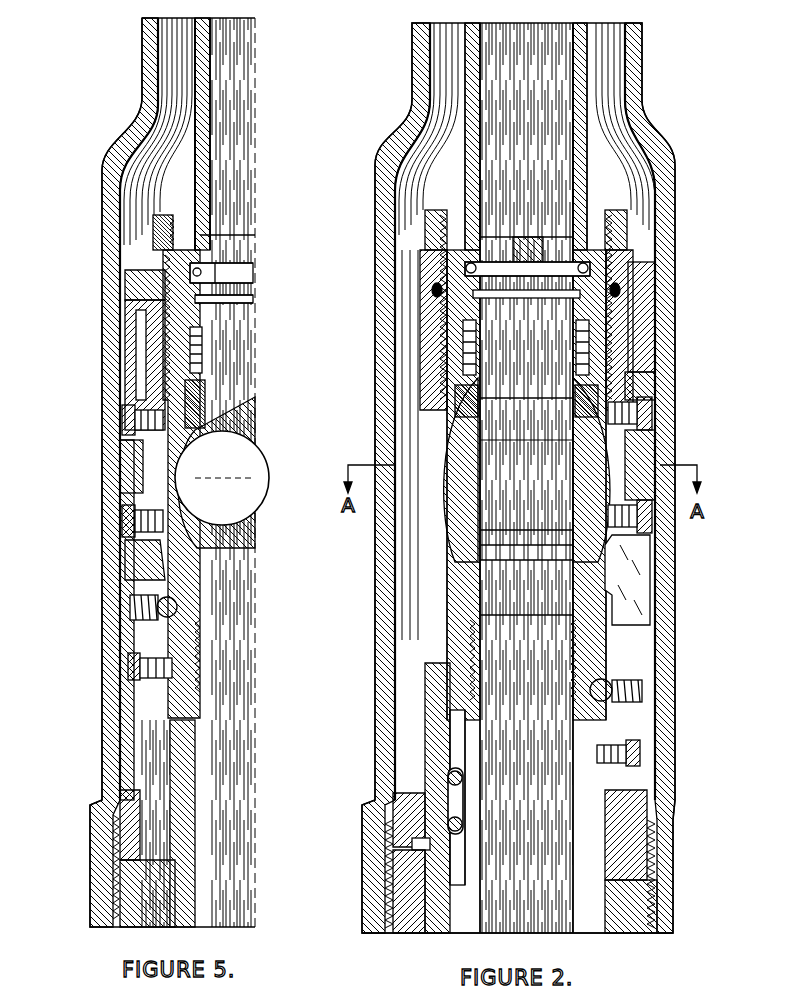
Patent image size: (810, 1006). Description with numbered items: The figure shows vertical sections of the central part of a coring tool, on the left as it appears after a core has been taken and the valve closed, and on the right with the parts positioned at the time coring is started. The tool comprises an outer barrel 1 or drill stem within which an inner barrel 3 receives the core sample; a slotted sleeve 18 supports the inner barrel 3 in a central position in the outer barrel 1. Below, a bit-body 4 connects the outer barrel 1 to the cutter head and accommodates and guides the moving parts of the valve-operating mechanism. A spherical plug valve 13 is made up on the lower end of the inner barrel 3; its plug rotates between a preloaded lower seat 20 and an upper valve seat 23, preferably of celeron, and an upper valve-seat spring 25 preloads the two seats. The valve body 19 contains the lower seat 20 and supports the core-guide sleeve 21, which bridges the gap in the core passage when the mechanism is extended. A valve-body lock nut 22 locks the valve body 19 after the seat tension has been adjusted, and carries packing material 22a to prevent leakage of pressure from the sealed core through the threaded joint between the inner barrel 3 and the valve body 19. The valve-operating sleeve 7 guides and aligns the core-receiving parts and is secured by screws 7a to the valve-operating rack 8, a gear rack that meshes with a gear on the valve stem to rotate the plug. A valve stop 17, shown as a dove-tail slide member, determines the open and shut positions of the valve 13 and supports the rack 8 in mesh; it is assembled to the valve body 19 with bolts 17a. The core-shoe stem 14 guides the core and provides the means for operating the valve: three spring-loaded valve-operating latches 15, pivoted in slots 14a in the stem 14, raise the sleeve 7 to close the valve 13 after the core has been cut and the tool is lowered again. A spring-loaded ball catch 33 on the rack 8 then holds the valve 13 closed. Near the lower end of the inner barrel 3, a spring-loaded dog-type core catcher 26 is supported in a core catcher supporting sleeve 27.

In FIG. 5, the outer barrel 1 is at (145, 113).
In FIG. 2, the outer barrel 1 is at (662, 335).
In FIG. 5, the inner barrel 3 is at (200, 107).
In FIG. 2, the inner barrel 3 is at (328, 93).
In FIG. 5, the bit-body 4 is at (112, 860).
In FIG. 2, the bit-body 4 is at (632, 894).
In FIG. 2, the valve-operating sleeve 7 is at (440, 878).
In FIG. 5, the screws 7a is at (128, 665).
In FIG. 2, the screws 7a is at (628, 752).
In FIG. 5, the valve-operating rack 8 is at (150, 290).
In FIG. 2, the valve-operating rack 8 is at (643, 580).
In FIG. 2, the spherical plug valve 13 is at (472, 427).
In FIG. 2, the core-shoe stem 14 is at (582, 837).
In FIG. 2, the slots 14a is at (425, 845).
In FIG. 2, the valve-operating latches 15 is at (447, 785).
In FIG. 5, the valve stop 17 is at (132, 467).
In FIG. 2, the valve stop 17 is at (648, 428).
In FIG. 5, the bolts 17a is at (122, 417).
In FIG. 2, the bolts 17a is at (650, 498).
In FIG. 2, the slotted sleeve 18 is at (397, 797).
In FIG. 5, the valve body 19 is at (145, 345).
In FIG. 2, the valve body 19 is at (632, 292).
In FIG. 2, the lower seat 20 is at (430, 545).
In FIG. 2, the core-guide sleeve 21 is at (440, 693).
In FIG. 5, the valve-body lock nut 22 is at (157, 222).
In FIG. 2, the valve-body lock nut 22 is at (622, 224).
In FIG. 2, the packing material 22a is at (440, 290).
In FIG. 2, the valve seat 23 is at (458, 395).
In FIG. 2, the upper valve-seat spring 25 is at (468, 345).
In FIG. 2, the core catcher 26 is at (478, 260).
In FIG. 2, the core catcher supporting sleeve 27 is at (475, 296).
In FIG. 5, the spring loaded ball catch 33 is at (160, 605).
In FIG. 2, the spring loaded ball catch 33 is at (632, 690).